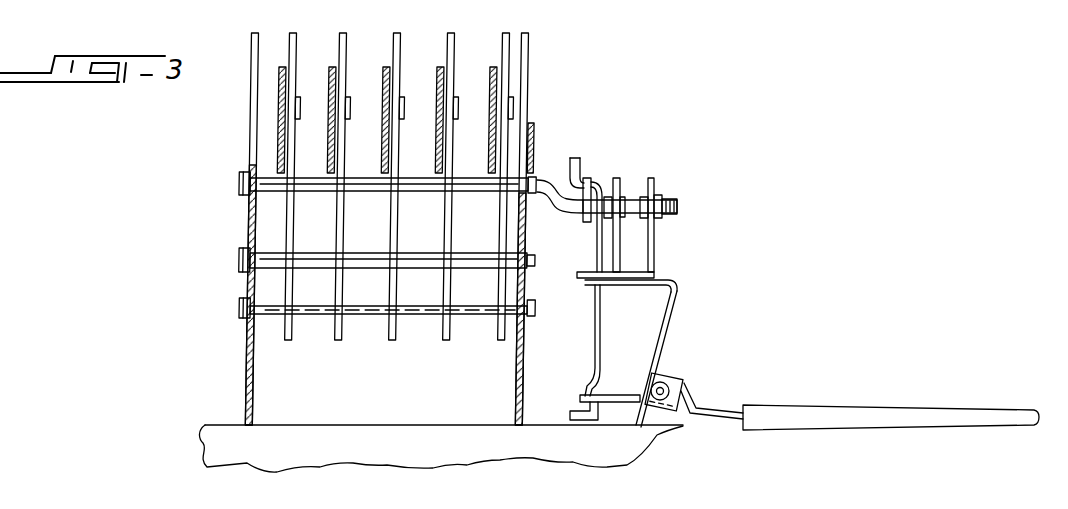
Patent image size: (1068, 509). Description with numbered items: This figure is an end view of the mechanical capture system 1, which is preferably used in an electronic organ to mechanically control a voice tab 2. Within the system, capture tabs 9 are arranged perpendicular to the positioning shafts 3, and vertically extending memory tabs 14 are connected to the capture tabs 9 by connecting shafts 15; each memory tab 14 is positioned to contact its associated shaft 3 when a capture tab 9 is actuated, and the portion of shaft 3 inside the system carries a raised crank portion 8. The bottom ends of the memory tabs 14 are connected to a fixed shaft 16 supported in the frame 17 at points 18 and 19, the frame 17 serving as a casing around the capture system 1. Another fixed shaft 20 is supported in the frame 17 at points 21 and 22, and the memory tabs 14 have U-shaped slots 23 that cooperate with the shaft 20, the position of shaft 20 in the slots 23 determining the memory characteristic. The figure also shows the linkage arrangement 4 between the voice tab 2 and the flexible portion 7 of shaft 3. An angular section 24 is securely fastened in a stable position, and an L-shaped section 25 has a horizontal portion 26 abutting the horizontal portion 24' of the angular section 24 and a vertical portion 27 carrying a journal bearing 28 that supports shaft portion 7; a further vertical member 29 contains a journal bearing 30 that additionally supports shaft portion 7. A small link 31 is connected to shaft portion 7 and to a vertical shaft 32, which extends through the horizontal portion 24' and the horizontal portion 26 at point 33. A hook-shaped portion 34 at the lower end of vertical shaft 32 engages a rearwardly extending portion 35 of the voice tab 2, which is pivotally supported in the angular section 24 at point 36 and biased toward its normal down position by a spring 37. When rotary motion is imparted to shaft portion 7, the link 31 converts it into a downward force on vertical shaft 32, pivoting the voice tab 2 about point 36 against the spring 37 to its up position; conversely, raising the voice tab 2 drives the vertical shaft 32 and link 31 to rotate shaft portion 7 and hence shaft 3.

The mechanical capture system 1 is at (540, 93).
The voice tab 2 is at (858, 418).
The positioning shaft 3 is at (261, 178).
The linkage arrangement 4 is at (672, 187).
The shaft portion 7 is at (543, 187).
The raised crank portion 8 is at (436, 184).
The capture tab 9 is at (280, 63).
The memory tab 14 is at (450, 35).
The connecting shaft 15 is at (302, 97).
The fixed shaft 16 is at (368, 313).
The frame 17 is at (243, 346).
The support point 18 is at (240, 311).
The support point 19 is at (528, 299).
The fixed shaft 20 is at (270, 257).
The support point 21 is at (240, 262).
The support point 22 is at (528, 254).
The U-shaped slot 23 is at (493, 273).
The angular section 24 is at (686, 356).
The horizontal portion 24' is at (653, 276).
The L-shaped section 25 is at (661, 245).
The horizontal portion 26 is at (625, 272).
The vertical portion 27 is at (652, 181).
The journal bearing 28 is at (678, 204).
The vertical member 29 is at (617, 180).
The journal bearing 30 is at (622, 212).
The link 31 is at (589, 179).
The vertical shaft 32 is at (578, 160).
The point 33 is at (600, 281).
The hook-shaped portion 34 is at (585, 392).
The rearwardly extending portion 35 is at (612, 396).
The pivot point 36 is at (640, 400).
The spring 37 is at (676, 379).